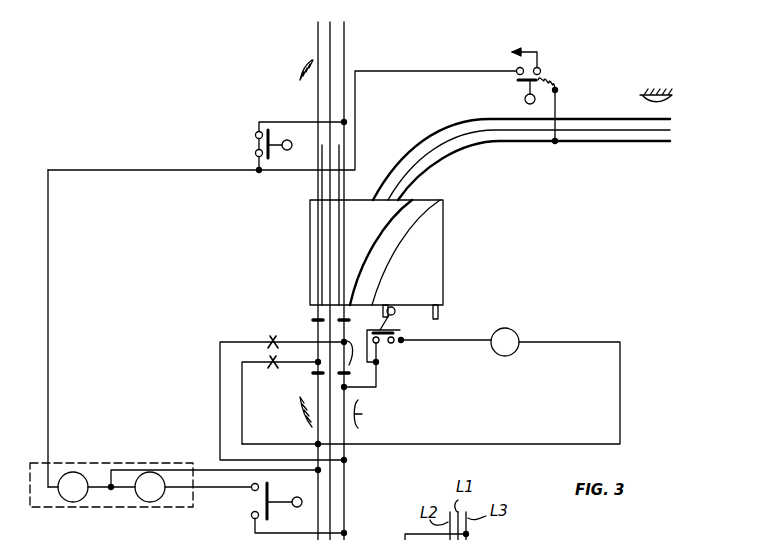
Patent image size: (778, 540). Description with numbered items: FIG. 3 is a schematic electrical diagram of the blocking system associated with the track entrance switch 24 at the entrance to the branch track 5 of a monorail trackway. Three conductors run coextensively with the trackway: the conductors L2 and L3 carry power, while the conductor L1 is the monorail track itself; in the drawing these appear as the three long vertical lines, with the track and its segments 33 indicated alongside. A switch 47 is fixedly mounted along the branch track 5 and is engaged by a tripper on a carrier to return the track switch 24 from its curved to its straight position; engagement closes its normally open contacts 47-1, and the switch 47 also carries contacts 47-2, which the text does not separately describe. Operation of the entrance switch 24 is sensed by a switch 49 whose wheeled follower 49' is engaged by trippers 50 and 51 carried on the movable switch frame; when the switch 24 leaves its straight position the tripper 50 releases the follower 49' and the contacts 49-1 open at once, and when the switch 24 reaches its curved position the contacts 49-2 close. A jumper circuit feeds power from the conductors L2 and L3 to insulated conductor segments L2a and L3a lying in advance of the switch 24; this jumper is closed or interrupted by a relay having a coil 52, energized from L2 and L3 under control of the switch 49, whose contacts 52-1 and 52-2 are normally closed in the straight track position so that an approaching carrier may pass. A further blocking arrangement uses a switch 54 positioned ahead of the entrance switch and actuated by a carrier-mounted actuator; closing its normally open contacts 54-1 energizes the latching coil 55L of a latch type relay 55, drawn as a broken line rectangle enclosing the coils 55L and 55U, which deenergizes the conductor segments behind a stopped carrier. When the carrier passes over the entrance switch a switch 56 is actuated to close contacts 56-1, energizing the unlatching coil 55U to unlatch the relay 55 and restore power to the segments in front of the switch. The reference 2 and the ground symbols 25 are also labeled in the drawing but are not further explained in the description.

The power supply conductors 2 is at (318, 190).
The branch track 5 is at (412, 151).
The track entrance switch 24 is at (443, 240).
The ground 25 is at (298, 72).
The segments 33 is at (372, 414).
The switch 47 is at (523, 95).
The normally open contacts 47-1 is at (543, 68).
The relay contact 47-2 is at (517, 76).
The switch 49 is at (400, 347).
The wheeled follower 49' is at (405, 299).
The contacts 49-1 is at (385, 334).
The contacts 49-2 is at (386, 350).
The tripper 50 is at (383, 316).
The tripper 51 is at (438, 318).
The relay coil 52 is at (517, 333).
The contacts 52-1 is at (264, 338).
The contacts 52-2 is at (280, 401).
The switch 54 is at (282, 507).
The normally open contacts 54-1 is at (252, 498).
The latch type relay 55 is at (108, 507).
The unlatching coil 55U is at (66, 472).
The latching coil 55L is at (146, 472).
The switch 56 is at (282, 150).
The contacts 56-1 is at (254, 141).
The conductor L1 is at (331, 495).
The conductor L2 is at (345, 478).
The conductor L3 is at (318, 510).
The insulated conductor segment L2a is at (346, 375).
The insulated conductor segment L3a is at (316, 324).